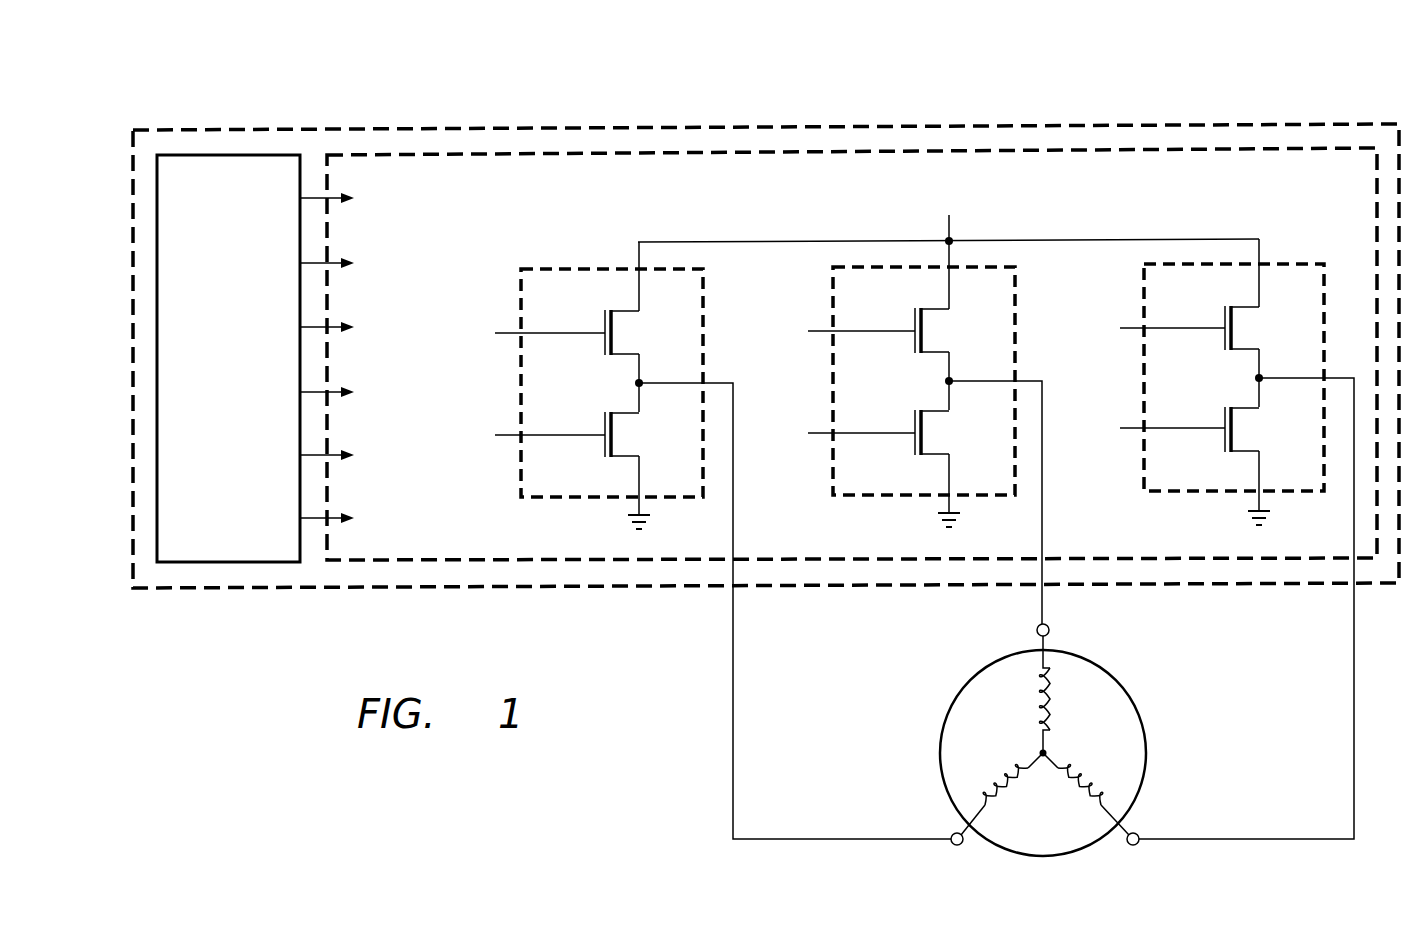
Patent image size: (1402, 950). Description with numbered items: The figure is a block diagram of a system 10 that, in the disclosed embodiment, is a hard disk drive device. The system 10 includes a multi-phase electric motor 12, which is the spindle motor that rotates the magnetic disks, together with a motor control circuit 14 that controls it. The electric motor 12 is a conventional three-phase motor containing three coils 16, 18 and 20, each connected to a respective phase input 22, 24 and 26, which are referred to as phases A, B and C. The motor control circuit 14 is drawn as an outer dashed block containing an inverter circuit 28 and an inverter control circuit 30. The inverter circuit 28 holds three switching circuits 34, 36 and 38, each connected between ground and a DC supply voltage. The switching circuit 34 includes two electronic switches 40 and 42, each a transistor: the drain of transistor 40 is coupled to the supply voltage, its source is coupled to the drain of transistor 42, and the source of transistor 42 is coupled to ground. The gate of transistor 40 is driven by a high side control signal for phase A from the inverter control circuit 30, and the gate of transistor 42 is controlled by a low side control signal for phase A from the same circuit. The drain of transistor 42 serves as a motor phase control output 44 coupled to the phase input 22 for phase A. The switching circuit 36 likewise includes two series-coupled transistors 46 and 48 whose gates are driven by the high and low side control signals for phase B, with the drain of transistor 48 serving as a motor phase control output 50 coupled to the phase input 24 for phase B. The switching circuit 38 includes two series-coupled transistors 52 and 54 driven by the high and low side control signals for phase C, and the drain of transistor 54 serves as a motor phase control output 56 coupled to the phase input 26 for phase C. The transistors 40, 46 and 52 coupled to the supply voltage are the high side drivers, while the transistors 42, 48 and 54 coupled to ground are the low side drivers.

The system 10 is at (610, 74).
The multi-phase electric motor 12 is at (940, 750).
The motor control circuit 14 is at (405, 590).
The coil 16 is at (1020, 790).
The coil 18 is at (1030, 705).
The coil 20 is at (1085, 780).
The phase input 22 is at (955, 848).
The phase input 24 is at (1050, 627).
The phase input 26 is at (1138, 848).
The inverter circuit 28 is at (754, 210).
The inverter control circuit 30 is at (217, 425).
The switching circuit 34 is at (578, 268).
The switching circuit 36 is at (833, 463).
The switching circuit 38 is at (1295, 263).
The electronic switch 40 is at (600, 345).
The electronic switch 42 is at (600, 447).
The motor phase control output 44 is at (733, 697).
The electronic switch 46 is at (912, 345).
The electronic switch 48 is at (912, 447).
The motor phase control output 50 is at (1042, 510).
The electronic switch 52 is at (1222, 341).
The electronic switch 54 is at (1222, 442).
The motor phase control output 56 is at (1354, 695).